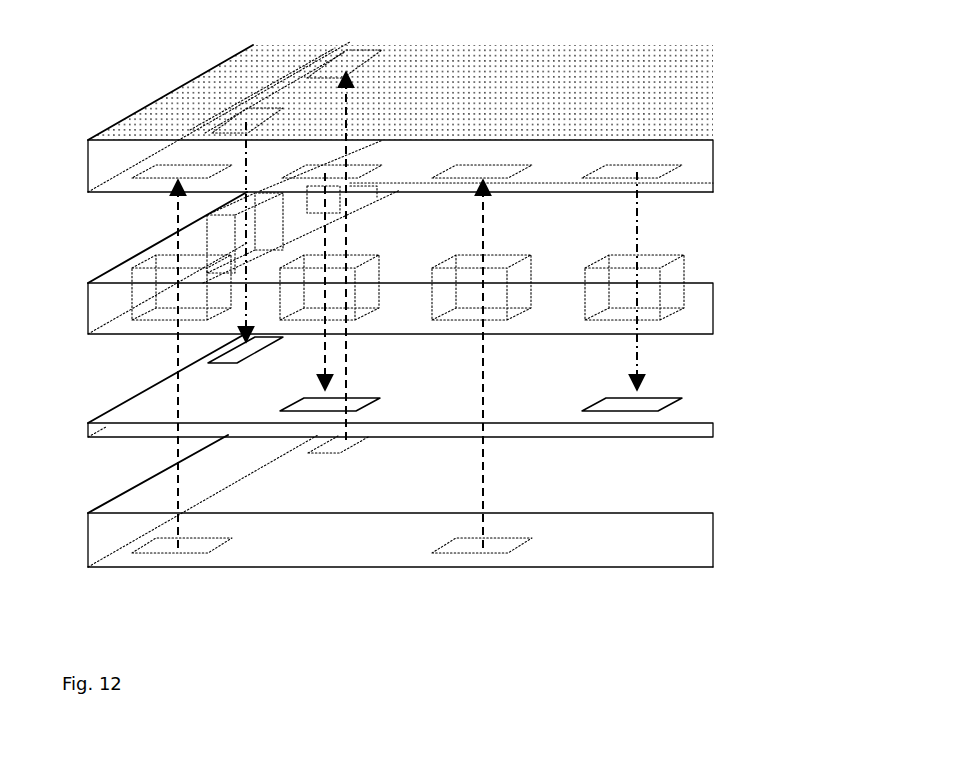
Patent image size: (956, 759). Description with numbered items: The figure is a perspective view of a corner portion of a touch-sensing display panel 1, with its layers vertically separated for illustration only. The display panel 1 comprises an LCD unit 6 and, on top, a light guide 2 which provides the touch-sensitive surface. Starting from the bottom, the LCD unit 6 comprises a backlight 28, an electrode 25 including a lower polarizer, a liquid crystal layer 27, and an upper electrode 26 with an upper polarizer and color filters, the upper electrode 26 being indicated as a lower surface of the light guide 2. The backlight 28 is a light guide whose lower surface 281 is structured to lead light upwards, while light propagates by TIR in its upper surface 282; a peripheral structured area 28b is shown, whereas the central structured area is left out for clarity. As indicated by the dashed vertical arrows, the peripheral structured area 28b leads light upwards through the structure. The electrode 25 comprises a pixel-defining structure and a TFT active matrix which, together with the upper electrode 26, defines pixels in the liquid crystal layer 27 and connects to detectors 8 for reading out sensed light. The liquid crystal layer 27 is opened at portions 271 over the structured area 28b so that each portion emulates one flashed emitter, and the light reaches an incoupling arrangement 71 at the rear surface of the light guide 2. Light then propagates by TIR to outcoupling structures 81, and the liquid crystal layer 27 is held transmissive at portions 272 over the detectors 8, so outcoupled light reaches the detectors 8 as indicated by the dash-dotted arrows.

The touch-sensing display panel 1 is at (741, 58).
The light guide 2 is at (100, 160).
The upper electrode 26 is at (111, 198).
The liquid crystal layer 27 is at (101, 308).
The portions of the LC layer opened over the structured area 271 is at (497, 262).
The portions of the LC layer held open over the detectors 272 is at (645, 262).
The electrode 25 is at (133, 410).
The detectors 8 is at (358, 397).
The backlight 28 is at (622, 550).
The lower surface of the backlight 281 is at (297, 571).
The upper surface of the backlight 282 is at (129, 500).
The peripheral structured area 28b is at (498, 547).
The incoupling arrangement 71 is at (507, 162).
The outcoupling structures 81 is at (657, 162).
The LCD unit 6 is at (762, 191).